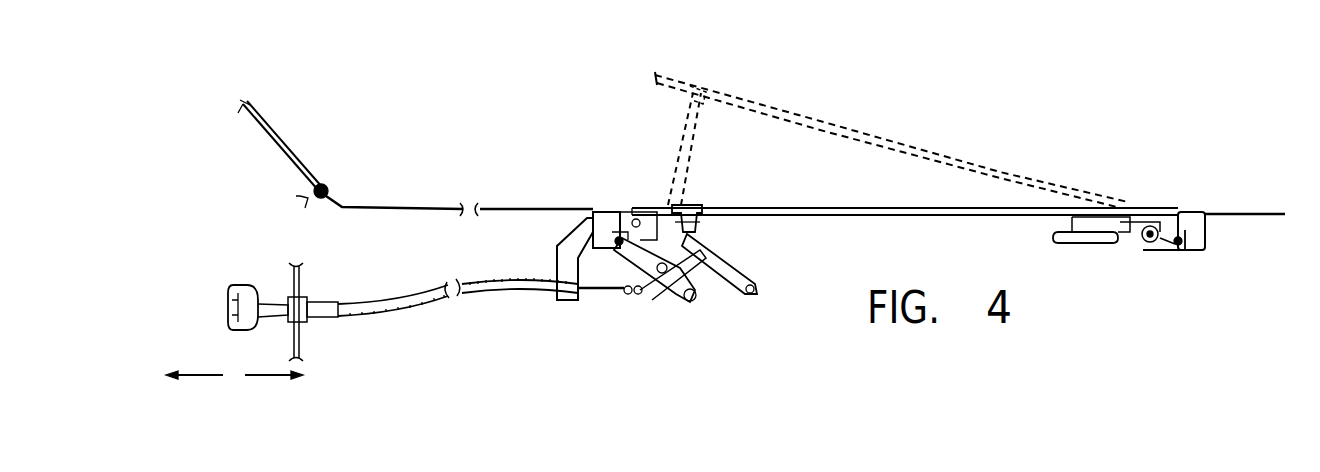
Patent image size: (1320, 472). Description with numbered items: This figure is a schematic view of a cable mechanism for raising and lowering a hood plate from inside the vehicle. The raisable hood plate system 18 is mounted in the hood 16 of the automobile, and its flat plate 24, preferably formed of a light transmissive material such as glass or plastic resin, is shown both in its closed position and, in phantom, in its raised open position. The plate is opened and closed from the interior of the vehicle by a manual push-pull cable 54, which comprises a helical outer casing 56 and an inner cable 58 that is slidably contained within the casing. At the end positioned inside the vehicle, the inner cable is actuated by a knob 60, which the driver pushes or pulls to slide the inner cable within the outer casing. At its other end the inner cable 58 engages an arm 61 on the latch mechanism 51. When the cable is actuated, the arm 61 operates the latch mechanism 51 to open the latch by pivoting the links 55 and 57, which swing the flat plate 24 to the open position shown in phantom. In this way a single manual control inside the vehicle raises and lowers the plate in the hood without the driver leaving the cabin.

The hood 16 is at (1238, 212).
The raisable hood plate system 18 is at (267, 128).
The flat plate 24 is at (910, 143).
The latch mechanism 51 is at (782, 276).
The manual push-pull cable 54 is at (396, 318).
The link 55 is at (688, 142).
The helical outer casing 56 is at (530, 292).
The link 57 is at (683, 183).
The inner cable 58 is at (607, 292).
The knob 60 is at (242, 284).
The arm 61 is at (638, 300).